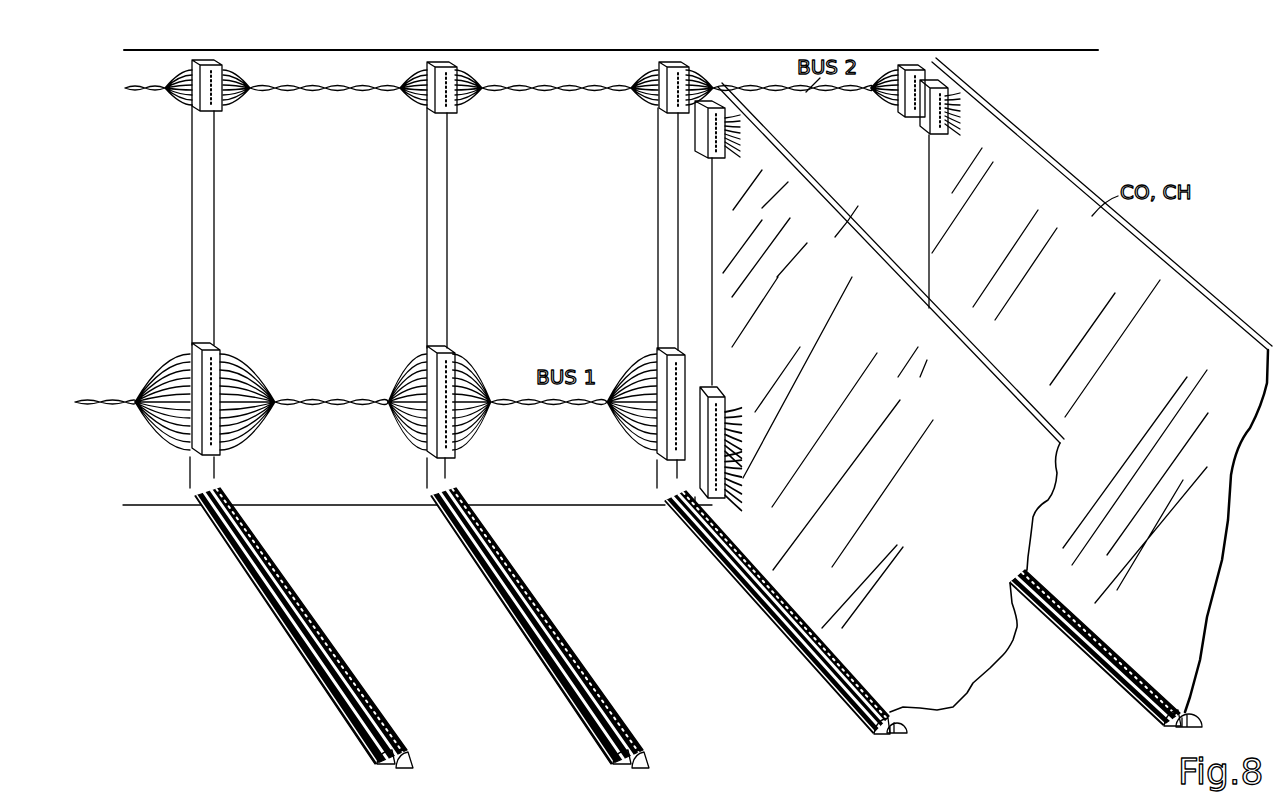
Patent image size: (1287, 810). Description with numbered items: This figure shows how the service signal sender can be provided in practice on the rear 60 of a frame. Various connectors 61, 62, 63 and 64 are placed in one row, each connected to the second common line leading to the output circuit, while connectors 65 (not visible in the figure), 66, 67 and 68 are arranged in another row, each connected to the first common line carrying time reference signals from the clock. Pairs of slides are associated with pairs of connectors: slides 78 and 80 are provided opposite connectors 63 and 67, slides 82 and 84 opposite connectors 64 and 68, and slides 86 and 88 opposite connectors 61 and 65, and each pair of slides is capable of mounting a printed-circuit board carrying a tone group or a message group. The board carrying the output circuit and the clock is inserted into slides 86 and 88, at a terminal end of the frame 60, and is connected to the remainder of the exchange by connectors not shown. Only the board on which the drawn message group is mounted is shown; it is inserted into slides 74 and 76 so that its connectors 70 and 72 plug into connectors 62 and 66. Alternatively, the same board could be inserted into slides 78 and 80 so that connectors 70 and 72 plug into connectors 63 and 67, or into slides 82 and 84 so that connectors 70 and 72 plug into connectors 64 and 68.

The rear of a frame 60 is at (531, 50).
The connector 61 is at (908, 100).
The connector 62 is at (664, 98).
The connector 63 is at (456, 112).
The connector 64 is at (223, 111).
The connector 65 is at (916, 275).
The connector 66 is at (665, 443).
The connector 67 is at (455, 445).
The connector 68 is at (222, 443).
The connector 70 is at (704, 150).
The connector 72 is at (716, 397).
The slide 74 is at (882, 733).
The slide 76 is at (905, 733).
The slide 78 is at (640, 763).
The slide 80 is at (666, 763).
The slide 82 is at (385, 763).
The slide 84 is at (413, 763).
The slide 86 is at (1160, 724).
The slide 88 is at (1204, 717).